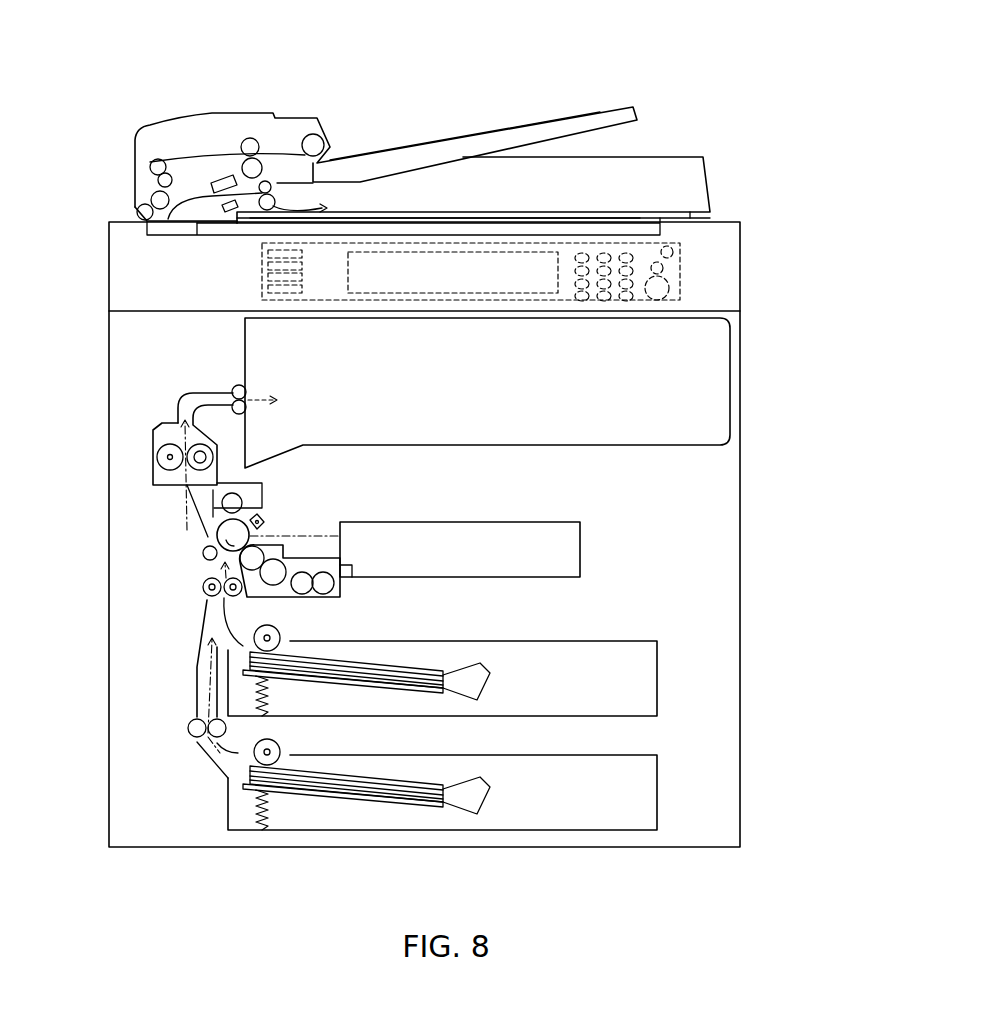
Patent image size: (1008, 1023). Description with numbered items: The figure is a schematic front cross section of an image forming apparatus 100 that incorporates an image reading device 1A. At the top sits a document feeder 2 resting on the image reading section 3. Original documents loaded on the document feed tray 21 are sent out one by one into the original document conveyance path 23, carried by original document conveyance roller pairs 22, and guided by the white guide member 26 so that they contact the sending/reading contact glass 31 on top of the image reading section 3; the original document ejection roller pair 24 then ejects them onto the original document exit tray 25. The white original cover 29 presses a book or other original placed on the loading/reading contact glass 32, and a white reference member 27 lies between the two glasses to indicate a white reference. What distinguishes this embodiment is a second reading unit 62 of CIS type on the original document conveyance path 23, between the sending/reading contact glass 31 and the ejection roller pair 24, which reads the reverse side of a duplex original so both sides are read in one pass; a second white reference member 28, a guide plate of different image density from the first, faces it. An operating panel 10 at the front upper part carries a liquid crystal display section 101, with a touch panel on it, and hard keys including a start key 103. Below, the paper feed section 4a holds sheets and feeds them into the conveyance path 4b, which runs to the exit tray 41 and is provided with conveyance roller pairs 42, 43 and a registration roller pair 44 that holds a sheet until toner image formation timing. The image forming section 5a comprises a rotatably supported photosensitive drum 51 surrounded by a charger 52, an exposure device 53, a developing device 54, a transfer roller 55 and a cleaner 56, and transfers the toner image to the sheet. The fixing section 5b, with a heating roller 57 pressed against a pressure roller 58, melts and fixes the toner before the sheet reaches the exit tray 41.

The image forming apparatus 100 is at (155, 65).
The image reading device 1A is at (788, 178).
The document feeder 2 is at (713, 177).
The image reading section 3 is at (742, 257).
The operating panel 10 is at (683, 272).
The document feed tray 21 is at (604, 113).
The original document conveyance roller pairs 22 is at (155, 158).
The original document conveyance path 23 is at (133, 182).
The original document ejection roller pair 24 is at (274, 182).
The original document exit tray 25 is at (412, 212).
The guide member 26 is at (178, 218).
The white reference member 27 is at (212, 237).
The white reference member 28 is at (251, 216).
The original cover 29 is at (698, 217).
The sending/reading contact glass 31 is at (150, 226).
The loading/reading contact glass 32 is at (495, 224).
The exit tray 41 is at (383, 444).
The conveyance roller pair 42 is at (188, 730).
The conveyance roller pair 43 is at (243, 389).
The registration roller pair 44 is at (204, 591).
The paper feed section 4a is at (671, 680).
The conveyance path 4b is at (195, 667).
The image forming section 5a is at (348, 483).
The fixing section 5b is at (150, 487).
The photosensitive drum 51 is at (207, 536).
The charger 52 is at (258, 521).
The exposure device 53 is at (485, 570).
The developing device 54 is at (343, 590).
The transfer roller 55 is at (202, 553).
The cleaner 56 is at (262, 483).
The heating roller 57 is at (218, 446).
The pressure roller 58 is at (156, 457).
The reading unit 62 is at (205, 172).
The liquid crystal display section 101 is at (484, 287).
The start key 103 is at (658, 302).